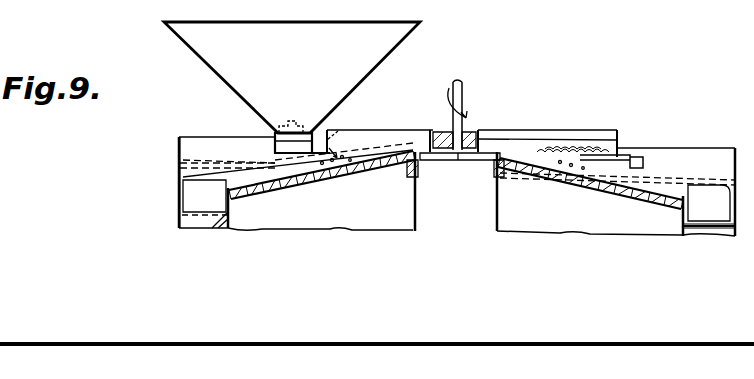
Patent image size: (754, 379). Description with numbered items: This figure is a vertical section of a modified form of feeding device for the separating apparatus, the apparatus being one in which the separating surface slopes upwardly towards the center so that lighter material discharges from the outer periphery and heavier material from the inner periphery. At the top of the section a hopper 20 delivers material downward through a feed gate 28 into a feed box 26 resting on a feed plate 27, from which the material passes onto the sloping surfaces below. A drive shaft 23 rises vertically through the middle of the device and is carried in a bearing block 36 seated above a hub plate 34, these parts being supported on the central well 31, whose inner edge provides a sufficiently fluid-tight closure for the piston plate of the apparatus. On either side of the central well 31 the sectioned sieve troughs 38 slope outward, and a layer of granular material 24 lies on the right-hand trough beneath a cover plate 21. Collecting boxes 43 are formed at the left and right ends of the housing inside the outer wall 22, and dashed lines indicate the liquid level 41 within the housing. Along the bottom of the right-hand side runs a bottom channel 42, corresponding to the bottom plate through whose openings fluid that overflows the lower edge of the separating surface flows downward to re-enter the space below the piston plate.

The hopper 20 is at (292, 77).
The feed gate 28 is at (298, 125).
The feed box 26 is at (277, 136).
The feed plate 27 is at (276, 147).
The drive shaft 23 is at (463, 86).
The bearing block 36 is at (431, 146).
The hub plate 34 is at (492, 175).
The central well 31 is at (418, 216).
The sieve trough 38 is at (681, 196).
The granular material 24 is at (611, 141).
The cover plate 21 is at (624, 155).
The collecting box 43 is at (459, 204).
The liquid level 41 is at (183, 161).
The outer wall 22 is at (183, 190).
The bottom plate 42 is at (698, 228).